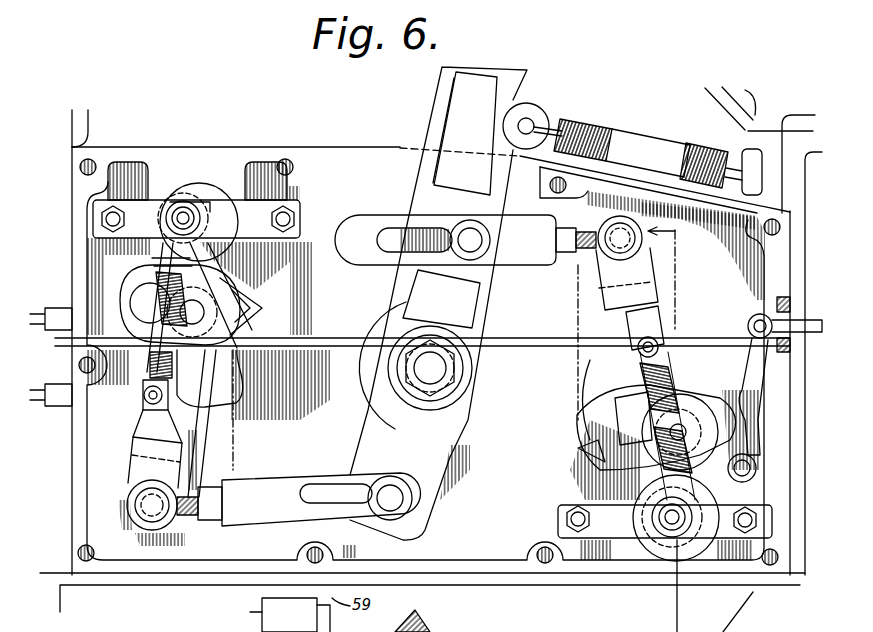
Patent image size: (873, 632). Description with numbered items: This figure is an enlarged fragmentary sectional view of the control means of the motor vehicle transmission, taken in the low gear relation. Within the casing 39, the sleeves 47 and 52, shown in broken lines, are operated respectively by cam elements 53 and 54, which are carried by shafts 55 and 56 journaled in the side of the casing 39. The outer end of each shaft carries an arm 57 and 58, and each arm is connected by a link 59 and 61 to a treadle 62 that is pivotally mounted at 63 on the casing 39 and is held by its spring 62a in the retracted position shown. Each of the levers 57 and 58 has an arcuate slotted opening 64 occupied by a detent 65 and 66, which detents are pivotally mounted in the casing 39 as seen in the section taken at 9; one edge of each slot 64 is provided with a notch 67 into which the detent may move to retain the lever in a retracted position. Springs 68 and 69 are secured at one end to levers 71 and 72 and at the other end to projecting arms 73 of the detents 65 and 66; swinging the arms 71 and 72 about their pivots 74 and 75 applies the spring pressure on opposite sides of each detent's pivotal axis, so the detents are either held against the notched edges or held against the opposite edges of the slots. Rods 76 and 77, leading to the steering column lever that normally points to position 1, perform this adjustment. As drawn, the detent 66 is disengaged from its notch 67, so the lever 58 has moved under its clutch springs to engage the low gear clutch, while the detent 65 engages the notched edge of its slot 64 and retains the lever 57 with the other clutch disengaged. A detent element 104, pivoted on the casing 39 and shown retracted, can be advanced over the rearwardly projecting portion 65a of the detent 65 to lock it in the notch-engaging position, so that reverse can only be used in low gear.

The numeral 1 is at (803, 125).
The Fig. 9 is at (671, 277).
The casing 39 is at (495, 578).
The sleeve 47 is at (578, 301).
The sleeve 52 is at (236, 423).
The cam element 53 is at (578, 356).
The cam element 54 is at (236, 403).
The shaft 55 is at (655, 542).
The shaft 56 is at (201, 208).
The arm 57 is at (612, 321).
The arm 58 is at (178, 432).
The link 59 is at (512, 250).
The link 61 is at (256, 480).
The treadle 62 is at (445, 95).
The spring 62a is at (629, 128).
The pivot 63 is at (468, 448).
The arcuate slotted opening 64 is at (580, 452).
The detent 65 is at (614, 398).
The rearwardly projecting portion 65a is at (750, 458).
The detent 66 is at (250, 276).
The notch 67 is at (588, 406).
The spring 68 is at (672, 372).
The spring 69 is at (148, 368).
The lever 71 is at (650, 315).
The lever 72 is at (136, 426).
The projecting arm 73 is at (695, 486).
The pivot 74 is at (686, 542).
The pivot 75 is at (180, 211).
The rod 76 is at (514, 338).
The rod 77 is at (51, 376).
The detent element 104 is at (752, 374).